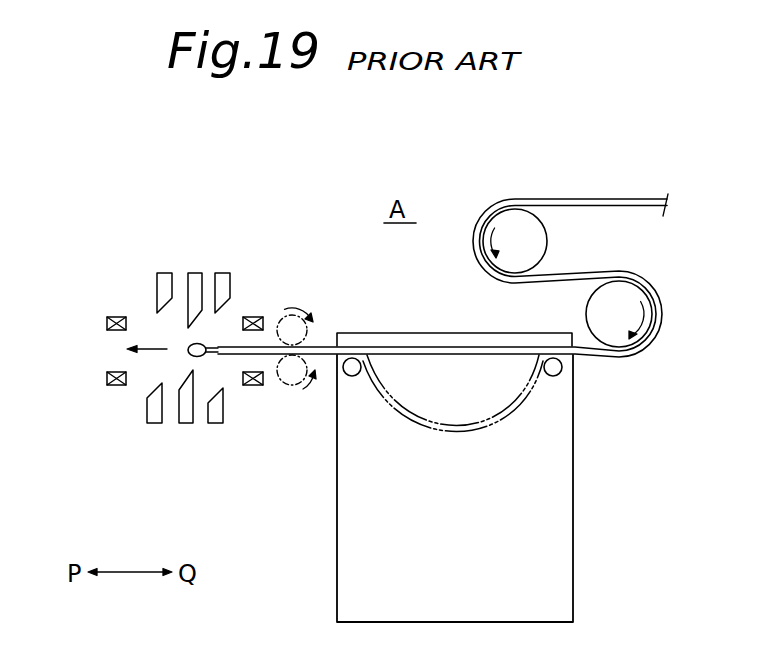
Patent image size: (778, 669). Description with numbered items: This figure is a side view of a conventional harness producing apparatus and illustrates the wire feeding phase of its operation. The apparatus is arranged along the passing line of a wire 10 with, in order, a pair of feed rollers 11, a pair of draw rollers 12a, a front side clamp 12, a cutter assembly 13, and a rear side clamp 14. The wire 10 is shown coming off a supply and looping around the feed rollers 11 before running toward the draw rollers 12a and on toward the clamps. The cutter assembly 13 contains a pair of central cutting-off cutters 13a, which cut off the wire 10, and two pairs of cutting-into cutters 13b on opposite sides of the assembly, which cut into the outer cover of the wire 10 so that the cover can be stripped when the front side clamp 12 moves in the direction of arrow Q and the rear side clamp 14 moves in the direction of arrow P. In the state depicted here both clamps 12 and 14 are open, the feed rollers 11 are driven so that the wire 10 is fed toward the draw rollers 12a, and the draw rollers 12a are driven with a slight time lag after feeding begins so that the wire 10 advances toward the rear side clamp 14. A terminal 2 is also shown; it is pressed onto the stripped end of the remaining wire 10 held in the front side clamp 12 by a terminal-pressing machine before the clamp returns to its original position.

The terminal 2 is at (200, 357).
The wire 10 is at (581, 199).
The feed rollers 11 is at (530, 245).
The front side clamp 12 is at (252, 317).
The draw rollers 12a is at (289, 380).
The cutter assembly 13 is at (203, 354).
The central cutting-off cutters 13a is at (193, 273).
The cutting-into cutters 13b is at (163, 270).
The rear side clamp 14 is at (112, 387).